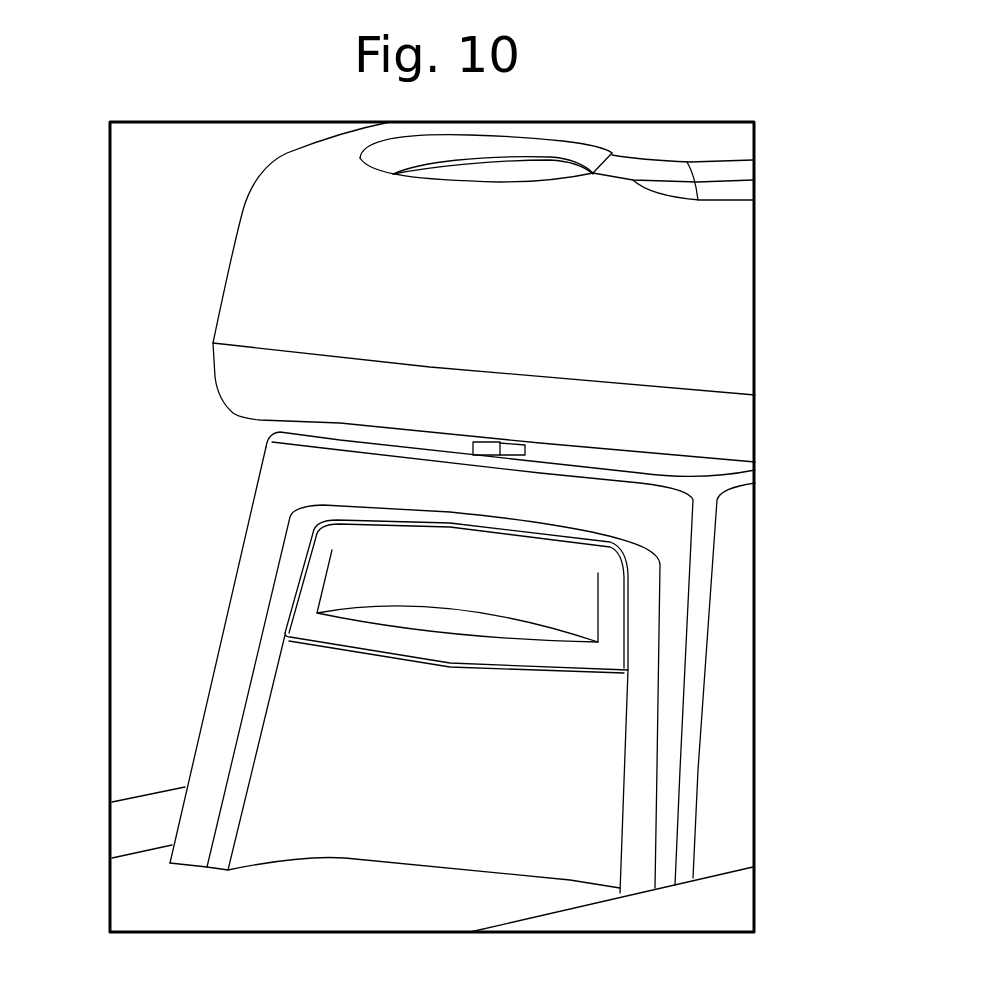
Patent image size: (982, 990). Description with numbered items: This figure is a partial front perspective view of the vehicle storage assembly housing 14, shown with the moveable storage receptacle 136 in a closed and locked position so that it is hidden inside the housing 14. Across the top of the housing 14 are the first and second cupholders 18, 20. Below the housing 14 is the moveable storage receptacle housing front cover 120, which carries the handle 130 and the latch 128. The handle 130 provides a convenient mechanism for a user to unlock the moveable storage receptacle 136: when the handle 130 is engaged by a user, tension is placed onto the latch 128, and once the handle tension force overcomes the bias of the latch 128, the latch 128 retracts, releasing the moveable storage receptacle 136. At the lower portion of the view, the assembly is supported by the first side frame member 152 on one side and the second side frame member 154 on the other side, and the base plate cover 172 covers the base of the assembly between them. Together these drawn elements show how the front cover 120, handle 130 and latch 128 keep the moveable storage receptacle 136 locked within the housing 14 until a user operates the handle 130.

The vehicle storage assembly housing 14 is at (733, 308).
The first cupholder 18 is at (482, 172).
The second cupholder 20 is at (730, 193).
The latch 128 is at (492, 438).
The moveable storage receptacle 136 is at (288, 478).
The handle 130 is at (568, 597).
The moveable storage receptacle housing front cover 120 is at (410, 843).
The second side frame member 154 is at (130, 833).
The first side frame member 152 is at (703, 915).
The base plate cover 172 is at (245, 903).